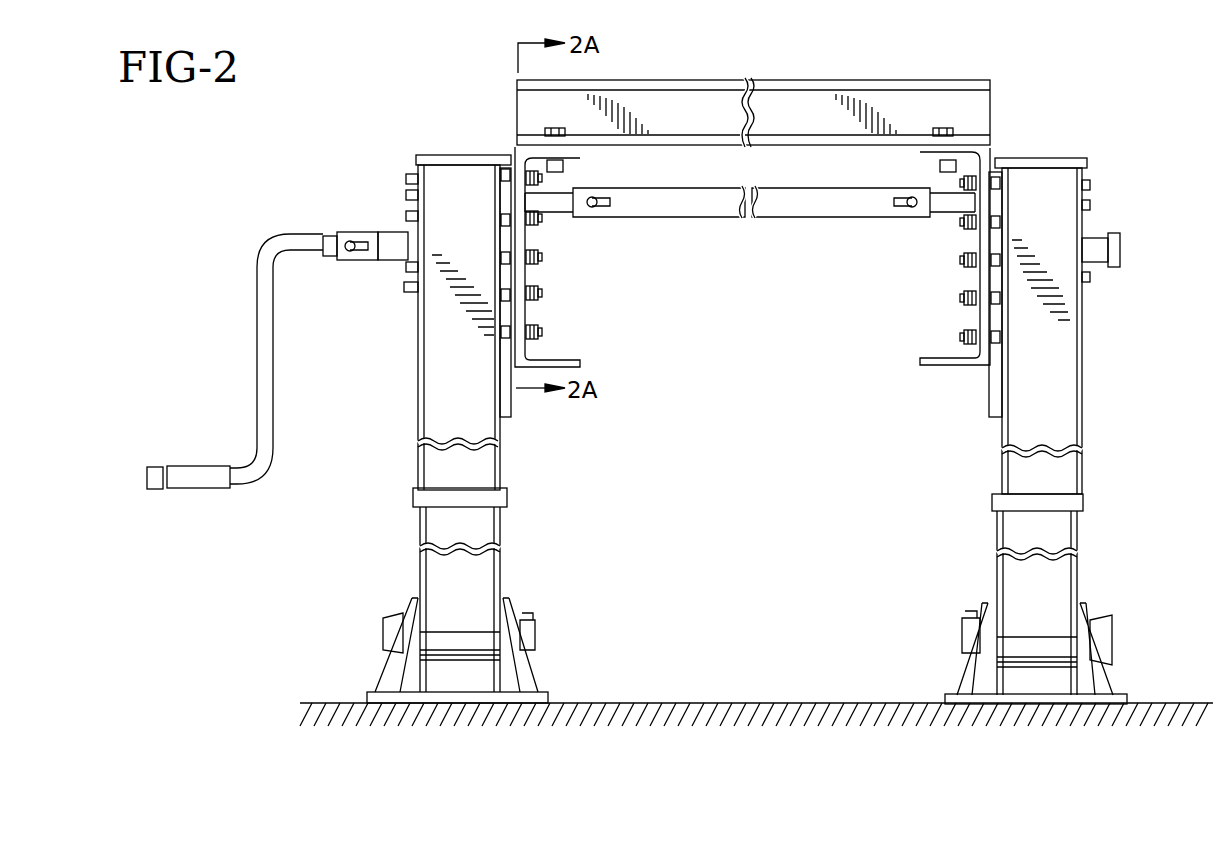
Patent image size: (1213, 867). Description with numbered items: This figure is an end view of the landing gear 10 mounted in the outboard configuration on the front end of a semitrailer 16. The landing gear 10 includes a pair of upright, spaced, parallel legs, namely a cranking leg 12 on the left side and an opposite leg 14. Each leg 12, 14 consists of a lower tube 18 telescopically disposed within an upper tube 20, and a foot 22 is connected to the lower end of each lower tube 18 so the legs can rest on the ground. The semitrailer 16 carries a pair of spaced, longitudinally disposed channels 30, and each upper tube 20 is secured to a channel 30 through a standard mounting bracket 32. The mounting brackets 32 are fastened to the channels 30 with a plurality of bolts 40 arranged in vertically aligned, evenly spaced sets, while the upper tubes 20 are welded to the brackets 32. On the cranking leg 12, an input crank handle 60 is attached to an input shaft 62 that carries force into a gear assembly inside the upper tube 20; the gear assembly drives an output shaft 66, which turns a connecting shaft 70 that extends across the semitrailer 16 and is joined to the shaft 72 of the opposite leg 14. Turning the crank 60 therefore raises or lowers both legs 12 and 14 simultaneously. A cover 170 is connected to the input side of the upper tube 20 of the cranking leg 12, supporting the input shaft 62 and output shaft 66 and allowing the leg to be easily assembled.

The landing gear 10 is at (408, 128).
The cranking leg 12 is at (432, 374).
The leg 14 is at (1072, 381).
The semitrailer 16 is at (793, 100).
The lower tube 18 is at (433, 528).
The upper tube 20 is at (432, 334).
The foot 22 is at (398, 690).
The channel 30 is at (560, 358).
The mounting bracket 32 is at (510, 405).
The bolts 40 is at (503, 257).
The input crank handle 60 is at (257, 382).
The input shaft 62 is at (380, 230).
The output shaft 66 is at (556, 203).
The connecting shaft 70 is at (750, 224).
The shaft 72 is at (945, 207).
The cover 170 is at (410, 199).